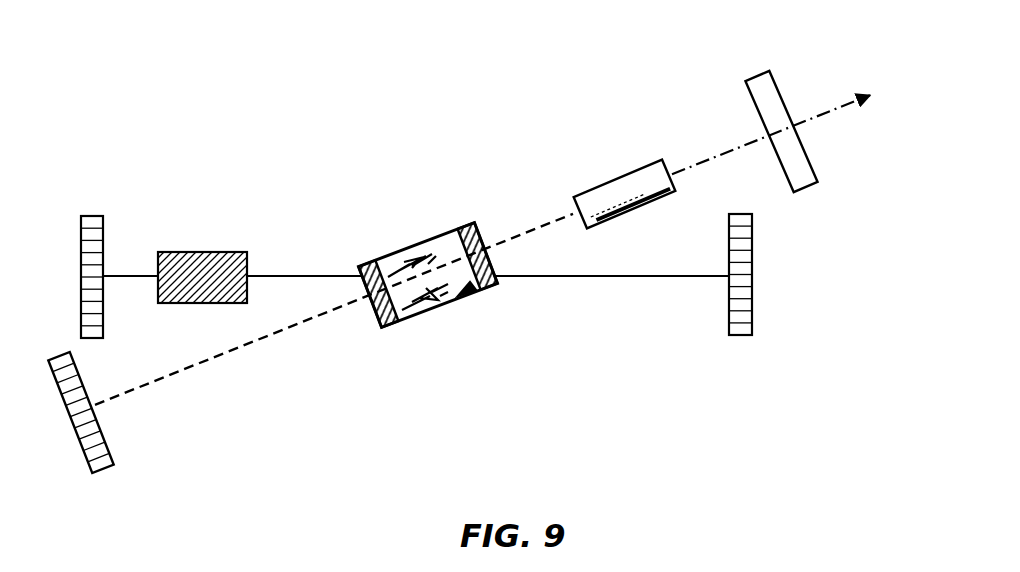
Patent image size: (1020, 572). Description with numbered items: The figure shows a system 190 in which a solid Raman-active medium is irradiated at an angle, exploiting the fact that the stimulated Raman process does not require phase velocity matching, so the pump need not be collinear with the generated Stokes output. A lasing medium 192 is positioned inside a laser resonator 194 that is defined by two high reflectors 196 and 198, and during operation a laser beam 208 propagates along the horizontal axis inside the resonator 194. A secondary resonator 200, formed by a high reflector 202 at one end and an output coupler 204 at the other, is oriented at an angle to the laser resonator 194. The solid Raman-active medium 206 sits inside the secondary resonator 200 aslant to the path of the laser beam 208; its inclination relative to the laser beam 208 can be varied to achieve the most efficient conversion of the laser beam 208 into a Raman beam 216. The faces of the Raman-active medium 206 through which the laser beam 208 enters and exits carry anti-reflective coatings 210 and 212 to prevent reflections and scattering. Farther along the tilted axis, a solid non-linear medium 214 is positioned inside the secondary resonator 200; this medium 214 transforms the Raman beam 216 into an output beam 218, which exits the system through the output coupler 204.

The system 190 is at (348, 119).
The lasing medium 192 is at (200, 252).
The laser resonator 194 is at (620, 370).
The high reflector 196 is at (92, 216).
The high reflector 198 is at (737, 335).
The secondary resonator 200 is at (543, 125).
The high reflector 202 is at (112, 453).
The output coupler 204 is at (757, 77).
The Raman-active medium 206 is at (431, 291).
The laser beam 208 is at (607, 278).
The anti-reflective coating 210 is at (386, 328).
The anti-reflective coating 212 is at (489, 287).
The non-linear medium 214 is at (613, 180).
The Raman beam 216 is at (273, 336).
The output beam 218 is at (730, 151).